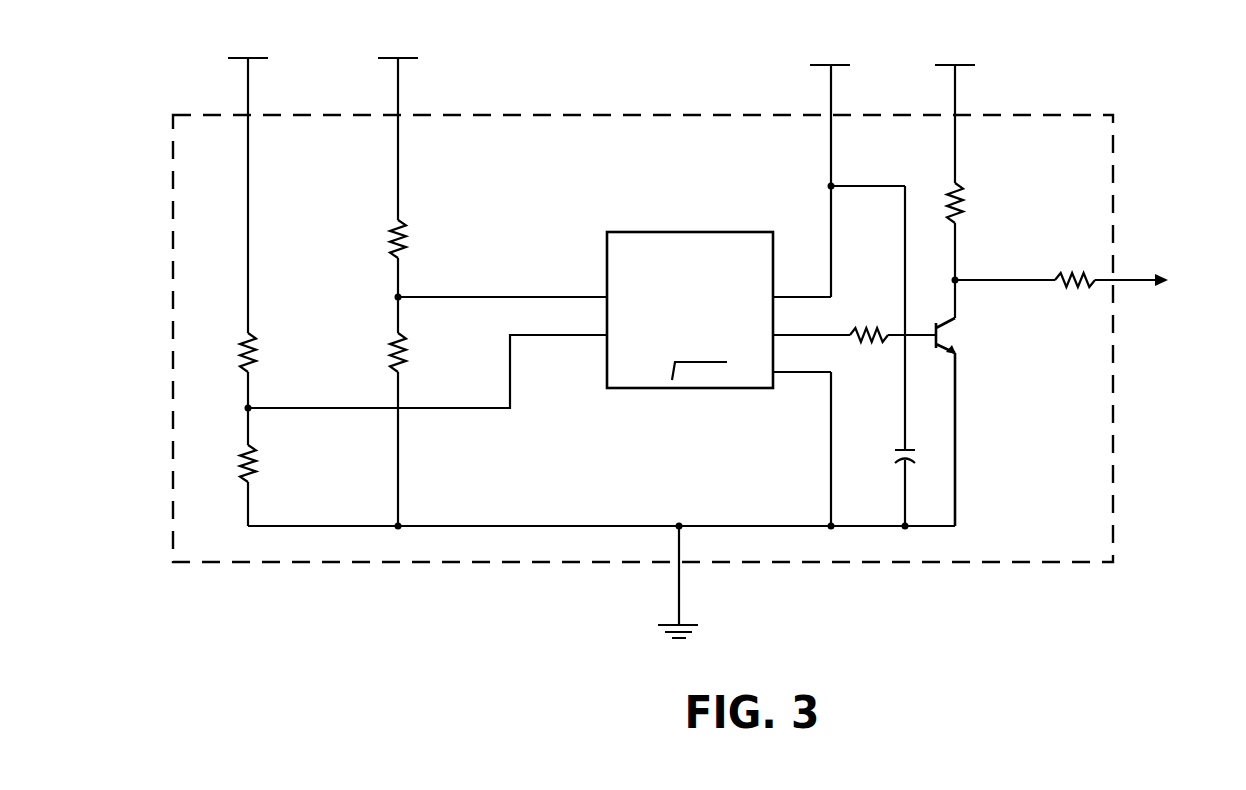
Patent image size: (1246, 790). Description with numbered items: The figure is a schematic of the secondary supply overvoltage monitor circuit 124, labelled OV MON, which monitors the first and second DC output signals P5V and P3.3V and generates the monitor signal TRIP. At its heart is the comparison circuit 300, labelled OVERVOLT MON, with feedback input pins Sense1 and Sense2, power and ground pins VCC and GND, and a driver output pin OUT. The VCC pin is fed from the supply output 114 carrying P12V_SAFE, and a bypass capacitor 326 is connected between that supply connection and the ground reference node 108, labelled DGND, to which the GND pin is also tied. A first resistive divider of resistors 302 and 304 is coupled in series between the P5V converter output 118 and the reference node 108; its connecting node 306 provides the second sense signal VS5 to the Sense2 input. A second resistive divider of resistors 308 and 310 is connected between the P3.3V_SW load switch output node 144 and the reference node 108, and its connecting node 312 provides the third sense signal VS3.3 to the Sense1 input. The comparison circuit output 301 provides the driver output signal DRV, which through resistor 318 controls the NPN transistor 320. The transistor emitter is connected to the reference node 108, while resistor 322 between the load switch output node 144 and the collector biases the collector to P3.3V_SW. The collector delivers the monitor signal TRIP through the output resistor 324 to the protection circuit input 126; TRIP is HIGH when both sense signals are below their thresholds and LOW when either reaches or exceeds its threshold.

The reference node 108 is at (679, 595).
The output 114 is at (831, 100).
The output of the first DC to DC converter 118 is at (248, 98).
The monitor circuit 124 is at (643, 115).
The protection circuit input 126 is at (1130, 280).
The load switch output node 144 is at (398, 98).
The comparison circuit 300 is at (700, 232).
The comparison circuit output 301 is at (812, 337).
The resistor 302 is at (256, 349).
The resistor 304 is at (256, 460).
The connecting node 306 is at (340, 408).
The resistor 308 is at (406, 237).
The resistor 310 is at (406, 349).
The connecting node 312 is at (530, 297).
The resistor 318 is at (866, 330).
The transistor 320 is at (957, 338).
The resistor 322 is at (963, 202).
The output resistor 324 is at (1072, 274).
The bypass capacitor 326 is at (895, 450).